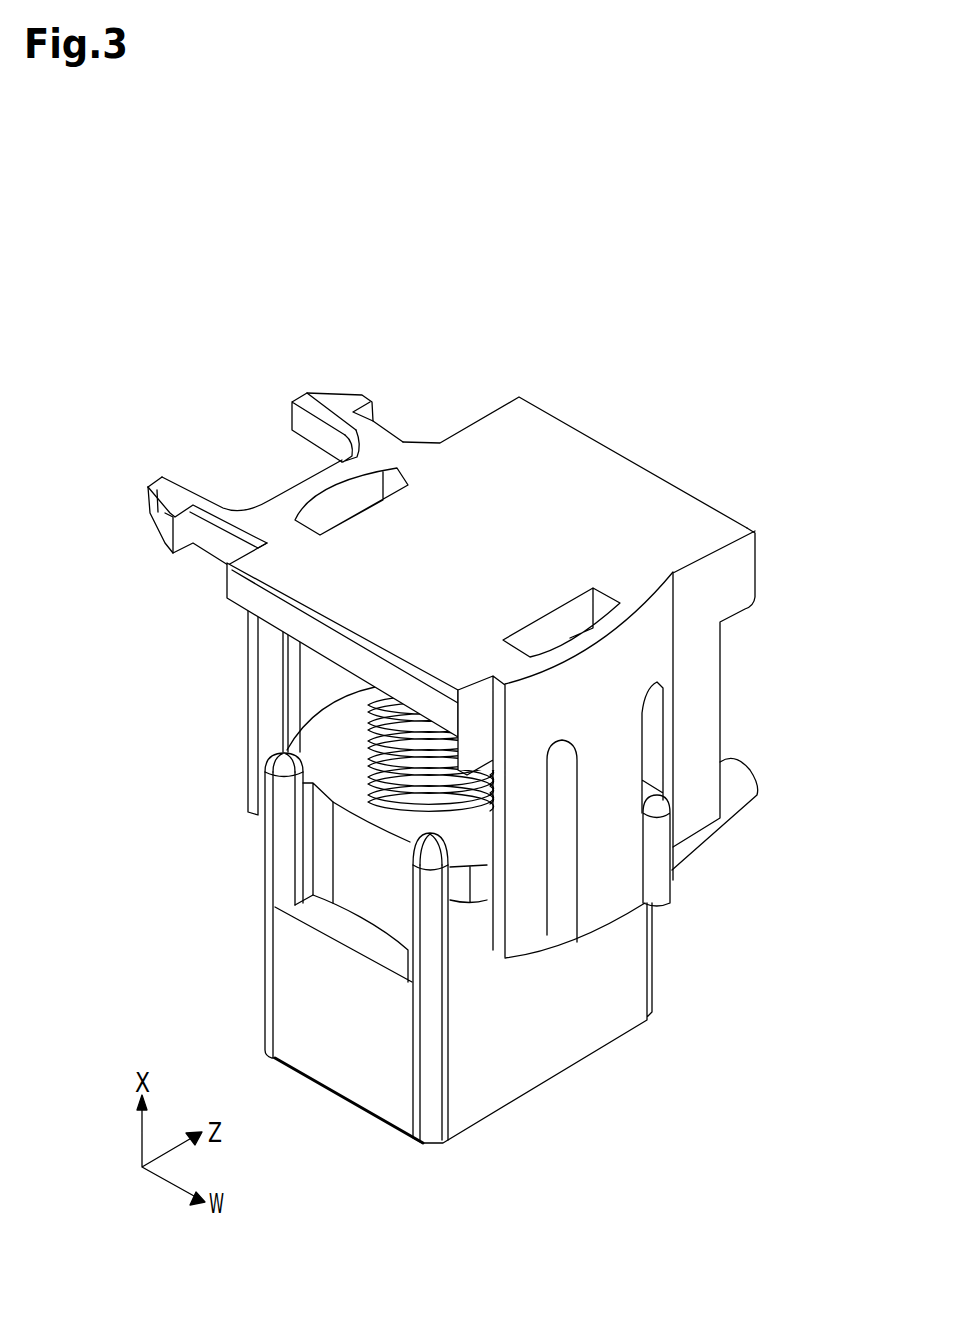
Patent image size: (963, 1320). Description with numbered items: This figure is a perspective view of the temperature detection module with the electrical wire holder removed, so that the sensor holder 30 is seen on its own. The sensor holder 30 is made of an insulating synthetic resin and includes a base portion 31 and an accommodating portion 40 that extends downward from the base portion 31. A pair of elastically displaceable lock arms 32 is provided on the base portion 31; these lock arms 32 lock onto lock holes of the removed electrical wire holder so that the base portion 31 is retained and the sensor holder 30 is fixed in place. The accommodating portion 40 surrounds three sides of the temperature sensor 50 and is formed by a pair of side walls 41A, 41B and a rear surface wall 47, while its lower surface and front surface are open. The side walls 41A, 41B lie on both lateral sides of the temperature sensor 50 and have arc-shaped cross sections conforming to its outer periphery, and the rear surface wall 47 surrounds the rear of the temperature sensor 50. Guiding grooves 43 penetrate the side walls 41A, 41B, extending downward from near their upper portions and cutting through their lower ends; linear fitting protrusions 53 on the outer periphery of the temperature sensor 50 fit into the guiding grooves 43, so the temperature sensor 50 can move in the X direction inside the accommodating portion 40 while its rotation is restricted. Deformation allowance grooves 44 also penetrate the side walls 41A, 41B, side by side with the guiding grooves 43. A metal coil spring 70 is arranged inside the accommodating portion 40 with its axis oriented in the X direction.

The sensor holder 30 is at (488, 390).
The base portion 31 is at (583, 463).
The lock arms 32 is at (325, 401).
The accommodating portion 40 is at (135, 702).
The side wall 41A is at (600, 840).
The side wall 41B is at (320, 672).
The guiding grooves 43 is at (654, 733).
The deformation allowance grooves 44 is at (557, 902).
The rear surface wall 47 is at (755, 558).
The temperature sensor 50 is at (570, 1040).
The fitting protrusions 53 is at (663, 883).
The coil spring 70 is at (400, 757).